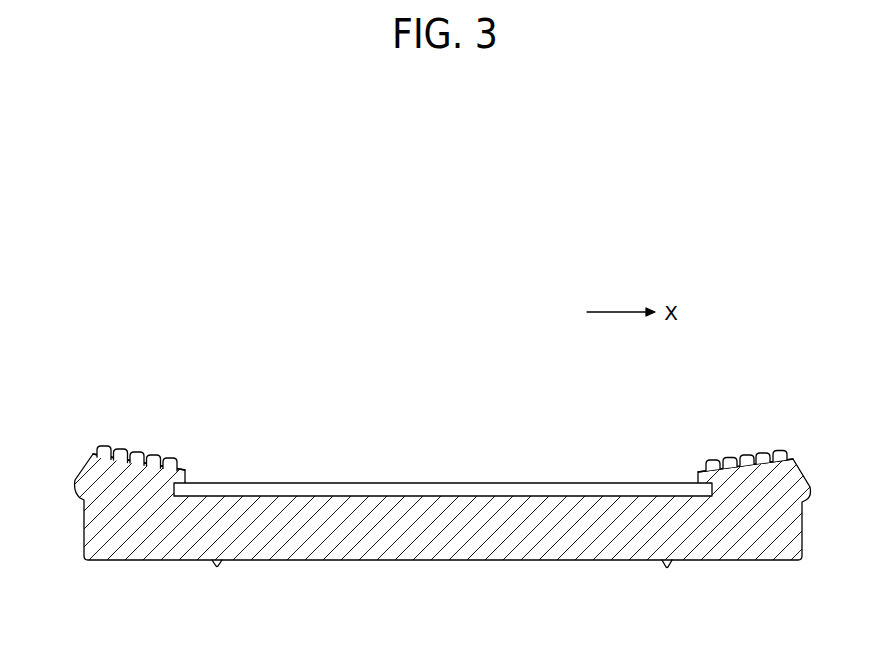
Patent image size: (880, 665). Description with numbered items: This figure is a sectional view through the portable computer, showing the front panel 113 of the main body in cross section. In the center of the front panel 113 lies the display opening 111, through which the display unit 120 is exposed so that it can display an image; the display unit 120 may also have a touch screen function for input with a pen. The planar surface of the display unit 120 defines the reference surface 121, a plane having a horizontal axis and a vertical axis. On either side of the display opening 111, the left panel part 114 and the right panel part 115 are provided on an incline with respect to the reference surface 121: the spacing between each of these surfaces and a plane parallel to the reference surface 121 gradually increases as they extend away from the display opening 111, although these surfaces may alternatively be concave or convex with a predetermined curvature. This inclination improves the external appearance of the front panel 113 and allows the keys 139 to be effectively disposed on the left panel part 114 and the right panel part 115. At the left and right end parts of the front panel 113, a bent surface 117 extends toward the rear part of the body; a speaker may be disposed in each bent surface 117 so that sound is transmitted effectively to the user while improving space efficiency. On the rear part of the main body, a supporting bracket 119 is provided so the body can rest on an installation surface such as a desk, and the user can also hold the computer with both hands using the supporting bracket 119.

The display opening 111 is at (187, 470).
The front panel 113 is at (694, 376).
The left panel part 114 is at (160, 455).
The right panel part 115 is at (712, 462).
The bent surface 117 is at (80, 468).
The supporting bracket 119 is at (219, 567).
The display unit 120 is at (182, 497).
The reference surface 121 is at (690, 497).
The keys 139 is at (116, 447).